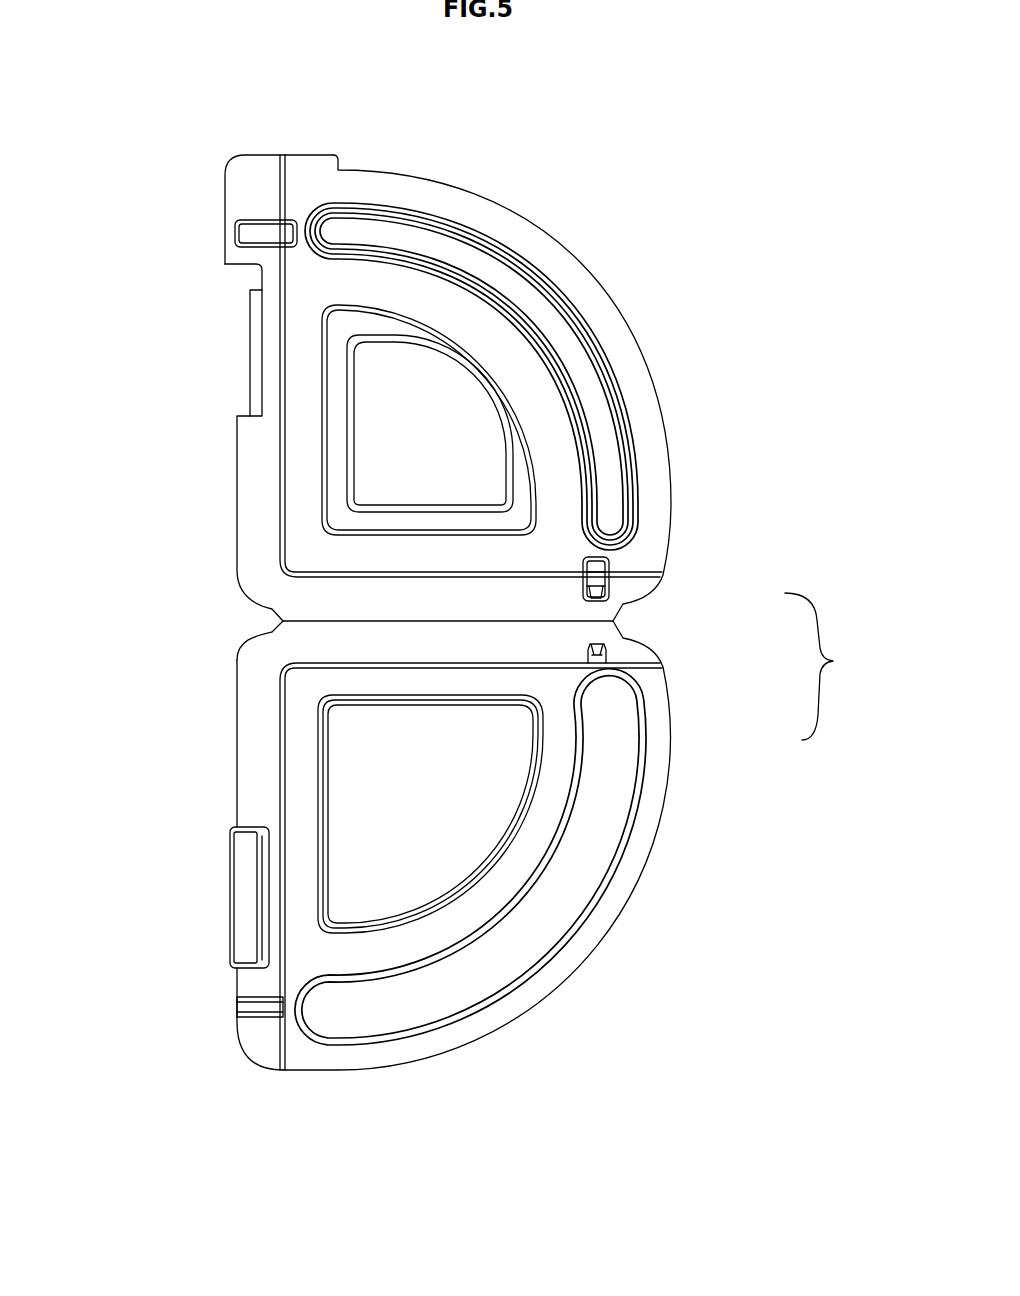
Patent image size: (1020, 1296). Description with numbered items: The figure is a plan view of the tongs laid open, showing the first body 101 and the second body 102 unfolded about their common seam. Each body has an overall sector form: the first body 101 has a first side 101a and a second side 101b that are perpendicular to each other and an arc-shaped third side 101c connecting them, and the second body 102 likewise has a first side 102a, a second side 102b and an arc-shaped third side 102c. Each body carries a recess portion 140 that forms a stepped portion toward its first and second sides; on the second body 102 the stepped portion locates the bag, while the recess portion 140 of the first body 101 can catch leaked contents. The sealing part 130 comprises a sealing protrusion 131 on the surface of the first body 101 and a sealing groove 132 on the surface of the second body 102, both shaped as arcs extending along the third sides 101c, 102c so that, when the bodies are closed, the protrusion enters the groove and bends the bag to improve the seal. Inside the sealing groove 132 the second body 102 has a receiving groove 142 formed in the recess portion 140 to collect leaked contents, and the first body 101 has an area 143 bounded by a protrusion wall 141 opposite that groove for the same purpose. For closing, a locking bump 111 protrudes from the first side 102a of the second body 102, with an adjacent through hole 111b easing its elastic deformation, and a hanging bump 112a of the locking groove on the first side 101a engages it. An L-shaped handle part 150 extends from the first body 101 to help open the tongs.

The first body 101 is at (459, 335).
The first side 101a is at (250, 440).
The second side 101b is at (363, 600).
The third side 101c is at (577, 280).
The second body 102 is at (420, 891).
The first side 102a is at (255, 760).
The second side 102b is at (358, 647).
The third side 102c is at (557, 983).
The locking bump 111 is at (154, 937).
The through hole 111b is at (262, 864).
The hanging bump 112a is at (250, 330).
The sealing part 130 is at (845, 666).
The sealing protrusion 131 is at (636, 512).
The sealing groove 132 is at (614, 727).
The recess portion 140 is at (303, 515).
The protrusion wall 141 is at (337, 452).
The receiving groove 142 is at (405, 793).
The area 143 is at (394, 390).
The handle part 150 is at (247, 182).